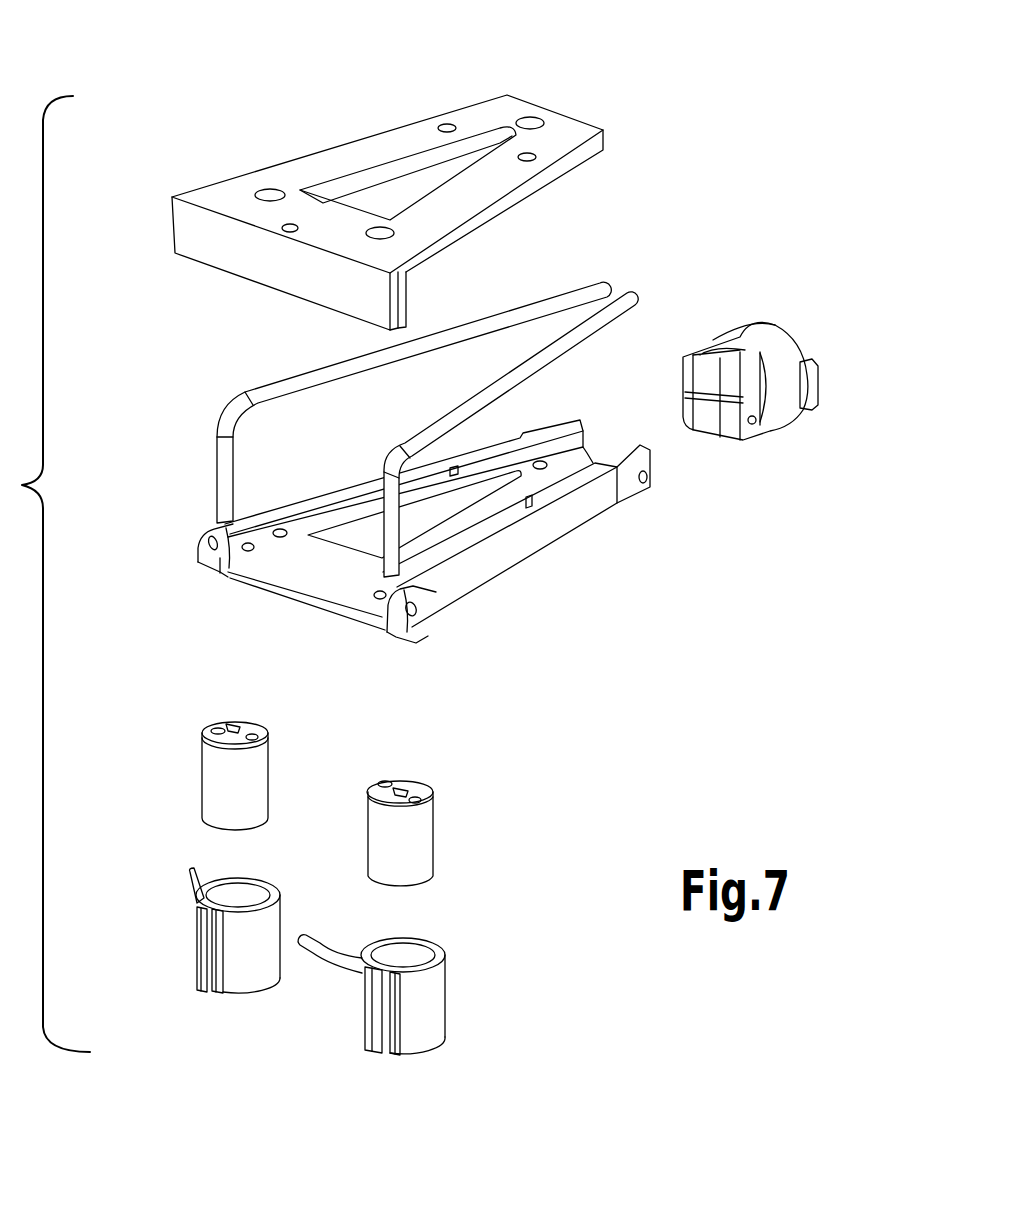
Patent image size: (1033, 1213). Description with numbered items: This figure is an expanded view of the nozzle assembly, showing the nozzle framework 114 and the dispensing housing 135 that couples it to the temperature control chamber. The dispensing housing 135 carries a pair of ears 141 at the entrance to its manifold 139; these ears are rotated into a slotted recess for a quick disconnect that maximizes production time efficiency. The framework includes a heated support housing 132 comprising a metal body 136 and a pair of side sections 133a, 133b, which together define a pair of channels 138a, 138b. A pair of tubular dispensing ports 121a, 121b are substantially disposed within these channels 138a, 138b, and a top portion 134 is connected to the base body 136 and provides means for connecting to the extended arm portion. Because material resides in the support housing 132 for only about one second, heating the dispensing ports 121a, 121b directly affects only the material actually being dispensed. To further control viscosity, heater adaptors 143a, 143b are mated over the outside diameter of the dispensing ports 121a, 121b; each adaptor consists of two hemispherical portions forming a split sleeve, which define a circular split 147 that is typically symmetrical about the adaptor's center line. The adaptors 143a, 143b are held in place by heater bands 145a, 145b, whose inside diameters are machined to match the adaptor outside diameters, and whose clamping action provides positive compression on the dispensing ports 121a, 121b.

The nozzle framework 114 is at (707, 133).
The top portion 134 is at (550, 188).
The dispensing port 121a is at (272, 381).
The dispensing port 121b is at (567, 355).
The support housing 132 is at (563, 593).
The side section 133a is at (342, 483).
The side section 133b is at (573, 540).
The body 136 is at (308, 608).
The channel 138a is at (215, 568).
The channel 138b is at (387, 630).
The dispensing housing 135 is at (792, 428).
The manifold 139 is at (750, 328).
The ears 141 is at (818, 370).
The heater adaptor 143a is at (202, 778).
The heater adaptor 143b is at (433, 833).
The circular split 147 is at (403, 790).
The heater band 145a is at (197, 957).
The heater band 145b is at (445, 1002).